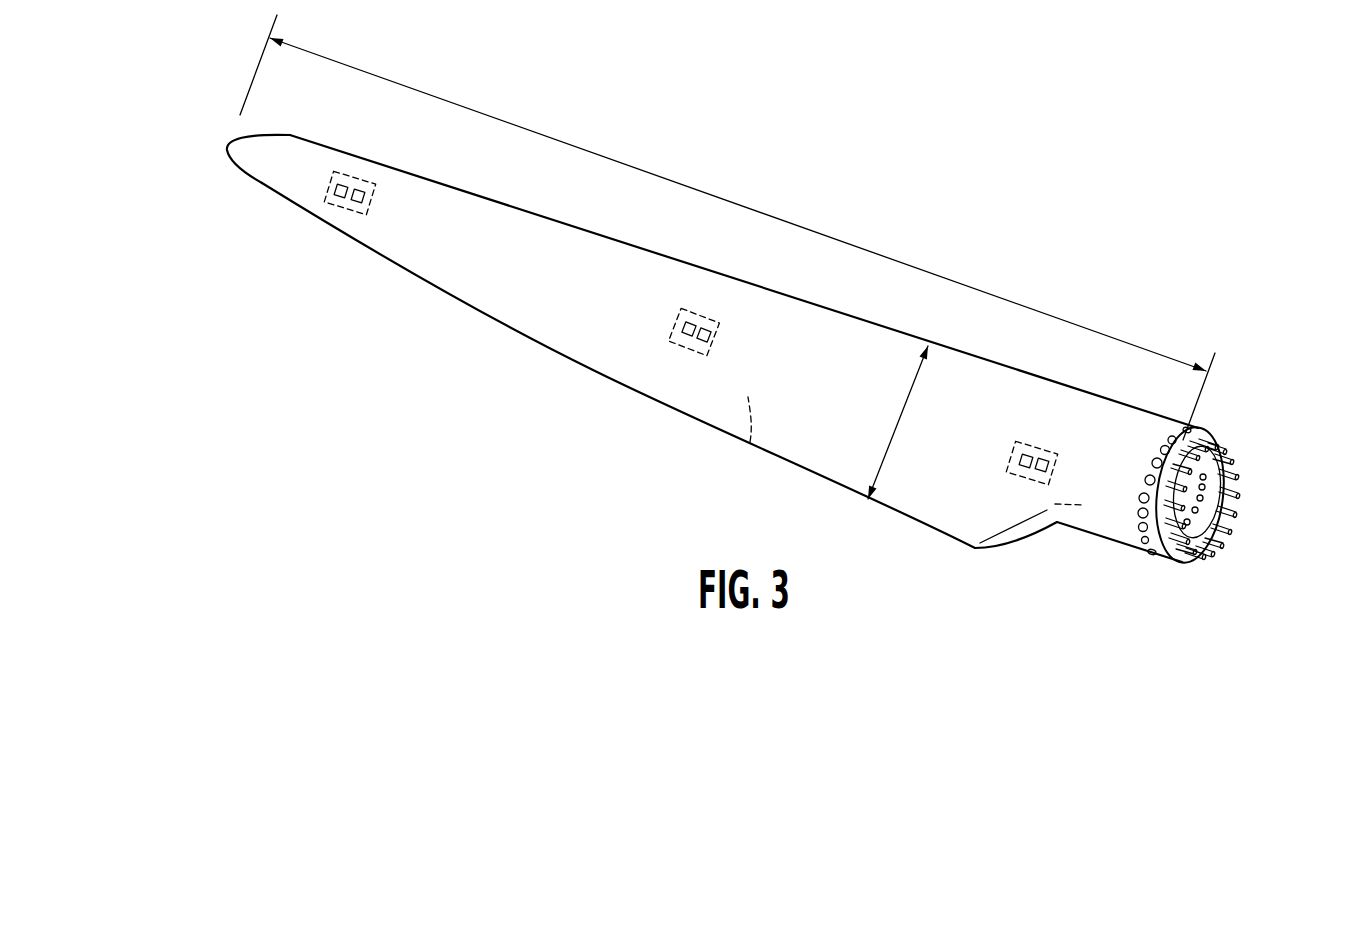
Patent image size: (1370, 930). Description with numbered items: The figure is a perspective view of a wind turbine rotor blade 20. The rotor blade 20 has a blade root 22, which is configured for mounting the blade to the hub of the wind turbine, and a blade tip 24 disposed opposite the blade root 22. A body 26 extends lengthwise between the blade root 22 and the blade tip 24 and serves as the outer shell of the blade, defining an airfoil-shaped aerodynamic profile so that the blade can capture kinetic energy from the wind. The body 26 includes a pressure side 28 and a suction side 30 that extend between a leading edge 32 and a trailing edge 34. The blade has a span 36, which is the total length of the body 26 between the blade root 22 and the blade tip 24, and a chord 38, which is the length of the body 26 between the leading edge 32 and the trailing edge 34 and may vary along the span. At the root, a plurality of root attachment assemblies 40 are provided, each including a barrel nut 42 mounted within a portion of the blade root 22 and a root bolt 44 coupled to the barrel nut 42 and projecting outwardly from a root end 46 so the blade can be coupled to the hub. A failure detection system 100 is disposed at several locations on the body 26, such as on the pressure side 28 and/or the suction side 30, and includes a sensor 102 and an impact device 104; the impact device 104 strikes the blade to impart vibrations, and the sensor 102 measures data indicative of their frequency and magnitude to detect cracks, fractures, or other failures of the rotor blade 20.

The rotor blade 20 is at (1113, 243).
The blade root 22 is at (1127, 537).
The blade tip 24 is at (224, 145).
The body 26 is at (597, 270).
The pressure side 28 is at (750, 442).
The suction side 30 is at (500, 283).
The leading edge 32 is at (783, 296).
The trailing edge 34 is at (590, 368).
The span 36 is at (767, 213).
The chord 38 is at (893, 430).
The root attachment assembly 40 is at (1127, 488).
The barrel nut 42 is at (1237, 457).
The root bolt 44 is at (1166, 450).
The root end 46 is at (1182, 560).
The system 100 is at (343, 210).
The sensor 102 is at (341, 186).
The impact device 104 is at (363, 197).